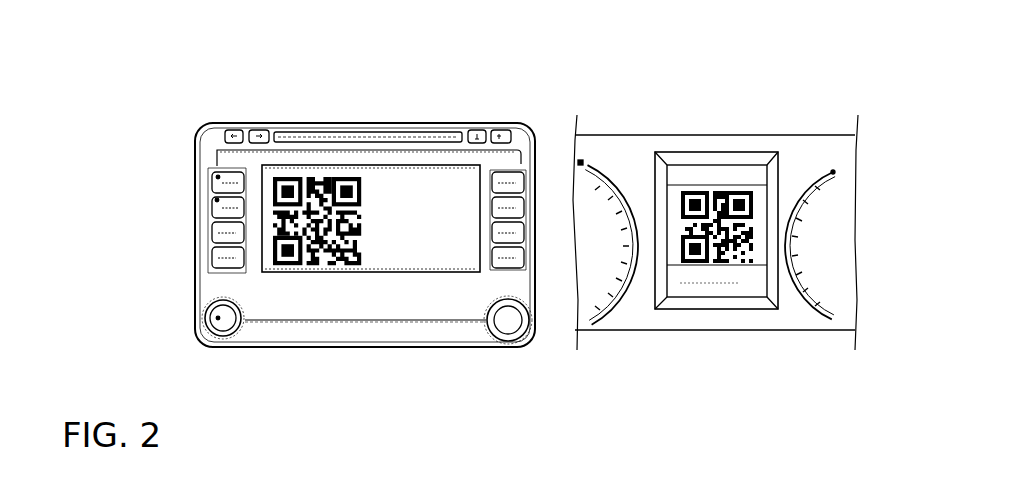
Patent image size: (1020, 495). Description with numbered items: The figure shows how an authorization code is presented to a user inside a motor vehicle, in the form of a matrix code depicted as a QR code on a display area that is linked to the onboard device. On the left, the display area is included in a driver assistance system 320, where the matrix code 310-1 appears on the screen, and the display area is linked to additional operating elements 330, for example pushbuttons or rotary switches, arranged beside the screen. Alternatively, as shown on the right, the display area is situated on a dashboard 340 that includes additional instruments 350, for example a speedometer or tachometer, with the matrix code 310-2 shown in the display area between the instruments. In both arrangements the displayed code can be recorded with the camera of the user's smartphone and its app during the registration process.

The driver assistance system 320 is at (315, 205).
The additional operating elements 330 is at (218, 318).
The matrix code 310-1 is at (313, 258).
The dashboard 340 is at (715, 207).
The additional instruments 350 is at (833, 172).
The matrix code 310-2 is at (723, 262).